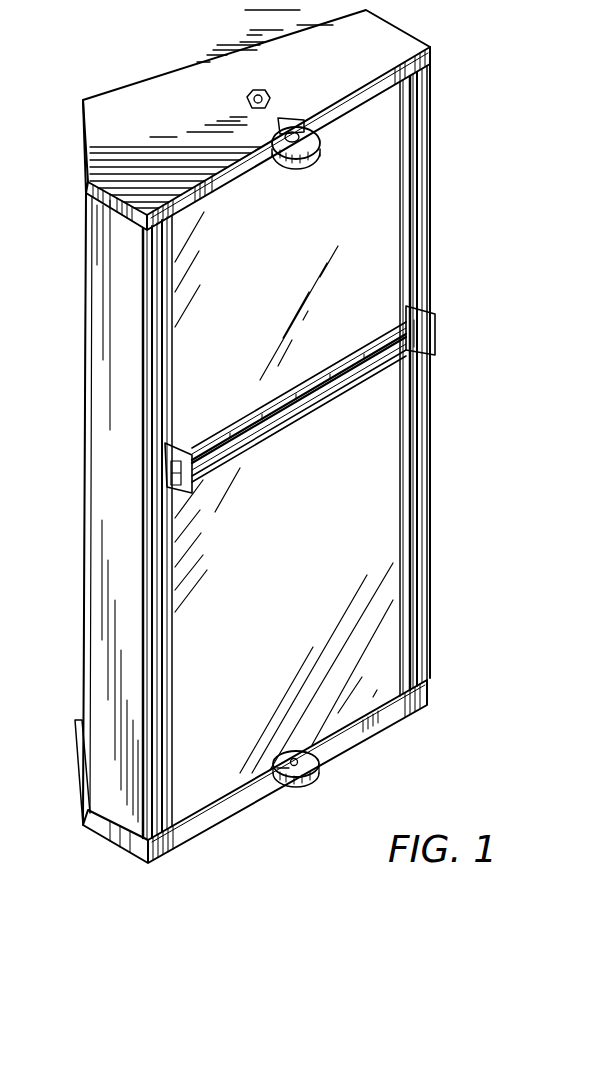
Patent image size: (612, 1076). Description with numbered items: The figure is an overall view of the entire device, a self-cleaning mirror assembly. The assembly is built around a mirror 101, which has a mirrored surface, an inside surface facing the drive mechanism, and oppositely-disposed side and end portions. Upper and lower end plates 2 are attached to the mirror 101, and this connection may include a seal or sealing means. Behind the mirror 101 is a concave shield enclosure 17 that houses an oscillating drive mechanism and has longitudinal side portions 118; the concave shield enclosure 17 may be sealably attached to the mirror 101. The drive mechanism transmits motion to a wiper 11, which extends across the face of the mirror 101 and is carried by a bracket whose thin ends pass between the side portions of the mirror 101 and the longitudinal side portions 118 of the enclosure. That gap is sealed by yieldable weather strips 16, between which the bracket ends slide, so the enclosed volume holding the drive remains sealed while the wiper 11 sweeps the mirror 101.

The end plate 2 is at (400, 42).
The yieldable weather strip 16 is at (170, 280).
The concave shield enclosure 17 is at (118, 498).
The wiper 11 is at (381, 368).
The longitudinal side portion 118 is at (418, 453).
The mirror 101 is at (382, 537).